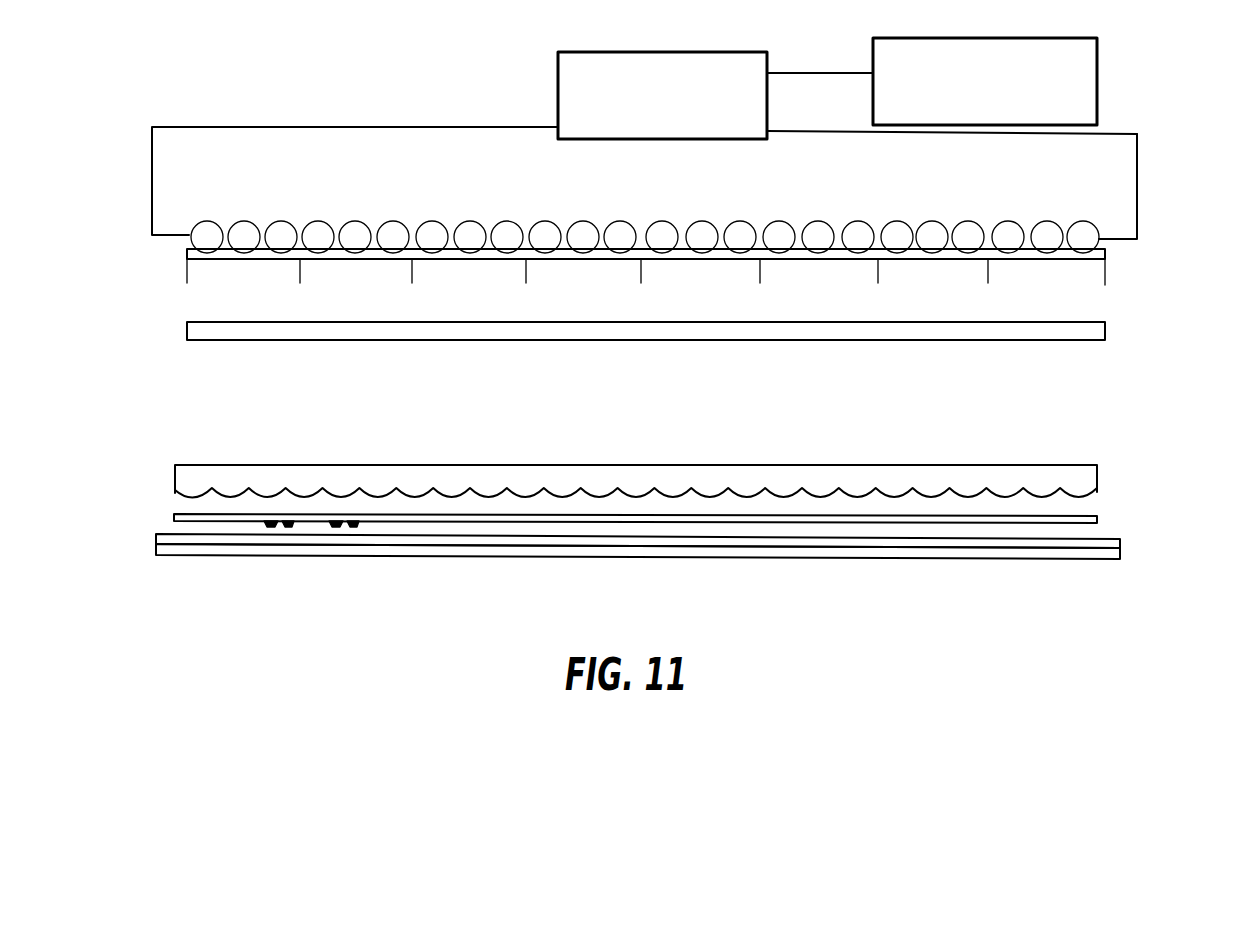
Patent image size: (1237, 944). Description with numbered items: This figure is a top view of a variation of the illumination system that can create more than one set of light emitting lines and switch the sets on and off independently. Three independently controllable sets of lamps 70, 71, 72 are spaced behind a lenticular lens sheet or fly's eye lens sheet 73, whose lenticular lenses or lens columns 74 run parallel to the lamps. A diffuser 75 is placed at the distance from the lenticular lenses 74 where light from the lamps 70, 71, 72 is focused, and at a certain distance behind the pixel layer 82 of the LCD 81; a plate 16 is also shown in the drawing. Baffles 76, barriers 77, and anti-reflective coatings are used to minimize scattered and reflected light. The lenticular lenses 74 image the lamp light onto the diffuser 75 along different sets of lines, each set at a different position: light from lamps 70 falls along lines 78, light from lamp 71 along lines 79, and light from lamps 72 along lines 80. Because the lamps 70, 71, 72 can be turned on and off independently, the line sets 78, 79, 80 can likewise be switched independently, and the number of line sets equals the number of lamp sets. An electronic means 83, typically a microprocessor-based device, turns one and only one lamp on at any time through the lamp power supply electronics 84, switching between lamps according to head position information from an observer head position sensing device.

The platen 16 is at (1105, 327).
The lamps 70 is at (207, 221).
The lamps 71 is at (244, 221).
The lamps 72 is at (281, 221).
The lenticular lens sheet 73 is at (1097, 480).
The lenticular lenses 74 is at (175, 496).
The diffuser 75 is at (1097, 520).
The baffles 76 is at (187, 276).
The barriers 77 is at (265, 260).
The lines 78 is at (303, 523).
The lines 79 is at (295, 514).
The lines 80 is at (273, 523).
The LCD 81 is at (1095, 559).
The pixel layer 82 is at (1120, 543).
The electronic means 83 is at (873, 96).
The lamp power supply electronics 84 is at (558, 88).